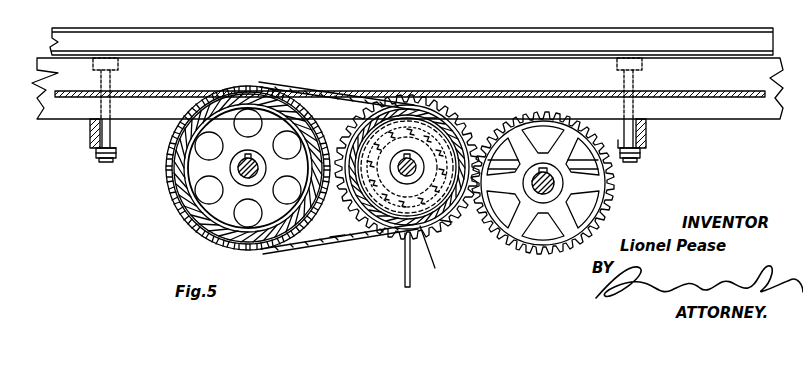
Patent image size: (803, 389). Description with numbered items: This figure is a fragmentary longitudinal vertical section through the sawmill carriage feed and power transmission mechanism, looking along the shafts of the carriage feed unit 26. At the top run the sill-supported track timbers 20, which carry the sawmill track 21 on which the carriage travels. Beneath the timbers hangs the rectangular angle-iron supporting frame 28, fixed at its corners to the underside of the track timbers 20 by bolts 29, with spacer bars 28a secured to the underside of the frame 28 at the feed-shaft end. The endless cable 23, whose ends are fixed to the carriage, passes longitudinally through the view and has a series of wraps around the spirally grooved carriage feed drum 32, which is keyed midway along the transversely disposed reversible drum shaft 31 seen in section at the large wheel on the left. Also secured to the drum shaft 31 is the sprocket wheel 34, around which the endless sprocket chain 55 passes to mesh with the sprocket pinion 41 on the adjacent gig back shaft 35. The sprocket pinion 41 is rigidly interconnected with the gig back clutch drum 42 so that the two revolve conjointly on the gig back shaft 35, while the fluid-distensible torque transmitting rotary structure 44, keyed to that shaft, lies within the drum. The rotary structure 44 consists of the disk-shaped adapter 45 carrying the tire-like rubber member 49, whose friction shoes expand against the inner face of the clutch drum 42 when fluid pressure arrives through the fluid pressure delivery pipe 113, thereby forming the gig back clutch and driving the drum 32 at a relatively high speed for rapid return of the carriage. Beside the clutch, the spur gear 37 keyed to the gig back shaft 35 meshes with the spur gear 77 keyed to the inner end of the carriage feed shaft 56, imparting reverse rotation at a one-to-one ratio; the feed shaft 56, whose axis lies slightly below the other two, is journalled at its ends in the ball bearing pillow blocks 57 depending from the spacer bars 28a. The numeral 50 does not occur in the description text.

The track timbers 20 is at (766, 107).
The sawmill track 21 is at (218, 30).
The endless cable 23 is at (62, 98).
The carriage feed unit 26 is at (435, 268).
The supporting frame 28 is at (95, 134).
The spacer bars 28a is at (593, 125).
The bolts 29 is at (106, 161).
The drum shaft 31 is at (245, 183).
The carriage feed drum 32 is at (185, 177).
The sprocket wheel 34 is at (312, 238).
The gig back shaft 35 is at (395, 233).
The spur gear 37 is at (452, 222).
The sprocket pinion 41 is at (335, 228).
The gig back clutch drum 42 is at (437, 104).
The fluid-distensible torque transmitting rotary structure 44 is at (407, 105).
The adapter 45 is at (412, 179).
The fluid-distensible tire-like rubber member 49 is at (466, 134).
The ratchet ring 50 is at (382, 117).
The endless sprocket chain 55 is at (182, 211).
The carriage feed shaft 56 is at (543, 192).
The ball bearing pillow blocks 57 is at (592, 171).
The spur gear 77 is at (612, 204).
The fluid pressure delivery pipe 113 is at (405, 276).